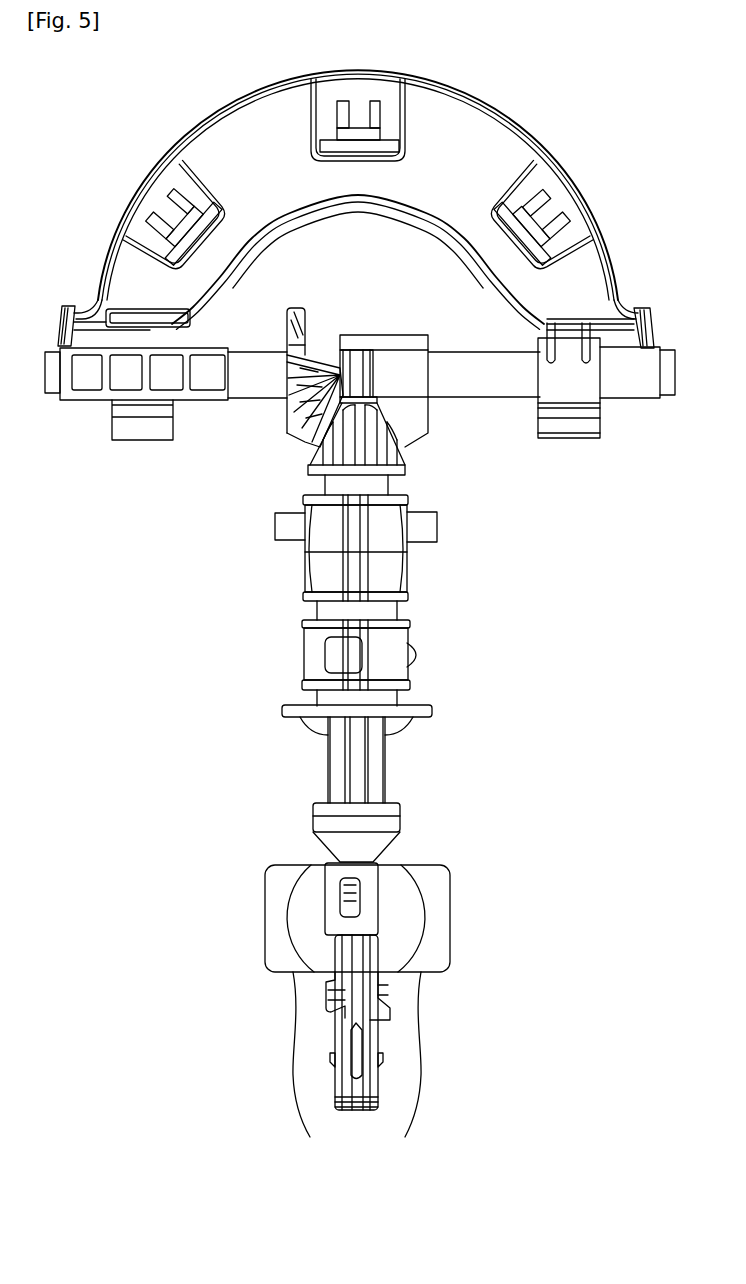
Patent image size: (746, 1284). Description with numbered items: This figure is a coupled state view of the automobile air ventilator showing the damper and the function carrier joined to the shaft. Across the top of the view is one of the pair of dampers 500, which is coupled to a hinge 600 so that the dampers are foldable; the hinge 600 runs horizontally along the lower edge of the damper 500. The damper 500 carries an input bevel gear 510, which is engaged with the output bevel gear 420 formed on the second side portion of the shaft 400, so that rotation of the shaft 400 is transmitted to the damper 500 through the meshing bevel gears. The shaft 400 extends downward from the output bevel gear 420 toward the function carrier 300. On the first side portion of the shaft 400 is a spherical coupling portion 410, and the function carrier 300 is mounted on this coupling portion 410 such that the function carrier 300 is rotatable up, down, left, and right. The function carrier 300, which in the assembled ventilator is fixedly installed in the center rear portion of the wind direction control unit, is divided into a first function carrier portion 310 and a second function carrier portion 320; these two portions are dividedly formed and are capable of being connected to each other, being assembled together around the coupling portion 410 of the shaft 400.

The damper 500 is at (482, 143).
The hinge 600 is at (360, 365).
The input bevel gear 510 is at (307, 417).
The output bevel gear 420 is at (355, 440).
The shaft 400 is at (382, 652).
The coupling portion 410 is at (402, 903).
The function carrier 300 is at (362, 1080).
The first function carrier portion 310 is at (319, 1072).
The second function carrier portion 320 is at (401, 1072).